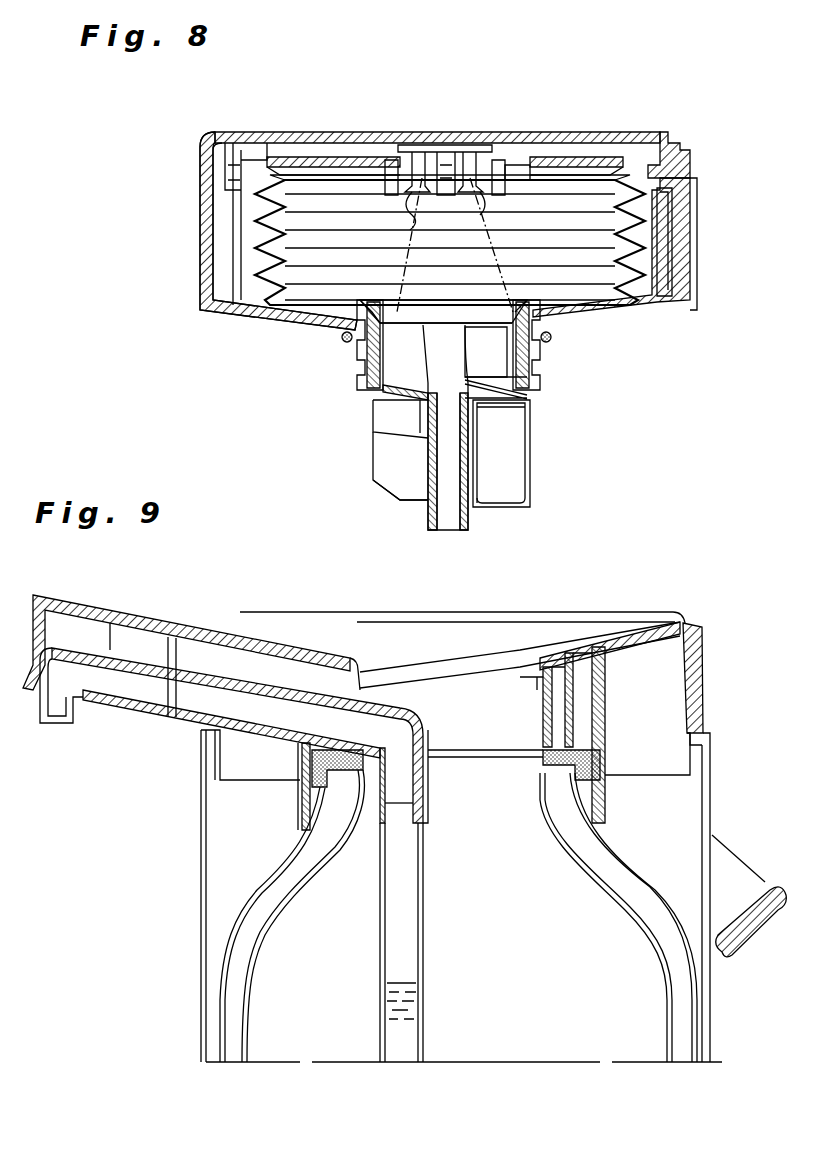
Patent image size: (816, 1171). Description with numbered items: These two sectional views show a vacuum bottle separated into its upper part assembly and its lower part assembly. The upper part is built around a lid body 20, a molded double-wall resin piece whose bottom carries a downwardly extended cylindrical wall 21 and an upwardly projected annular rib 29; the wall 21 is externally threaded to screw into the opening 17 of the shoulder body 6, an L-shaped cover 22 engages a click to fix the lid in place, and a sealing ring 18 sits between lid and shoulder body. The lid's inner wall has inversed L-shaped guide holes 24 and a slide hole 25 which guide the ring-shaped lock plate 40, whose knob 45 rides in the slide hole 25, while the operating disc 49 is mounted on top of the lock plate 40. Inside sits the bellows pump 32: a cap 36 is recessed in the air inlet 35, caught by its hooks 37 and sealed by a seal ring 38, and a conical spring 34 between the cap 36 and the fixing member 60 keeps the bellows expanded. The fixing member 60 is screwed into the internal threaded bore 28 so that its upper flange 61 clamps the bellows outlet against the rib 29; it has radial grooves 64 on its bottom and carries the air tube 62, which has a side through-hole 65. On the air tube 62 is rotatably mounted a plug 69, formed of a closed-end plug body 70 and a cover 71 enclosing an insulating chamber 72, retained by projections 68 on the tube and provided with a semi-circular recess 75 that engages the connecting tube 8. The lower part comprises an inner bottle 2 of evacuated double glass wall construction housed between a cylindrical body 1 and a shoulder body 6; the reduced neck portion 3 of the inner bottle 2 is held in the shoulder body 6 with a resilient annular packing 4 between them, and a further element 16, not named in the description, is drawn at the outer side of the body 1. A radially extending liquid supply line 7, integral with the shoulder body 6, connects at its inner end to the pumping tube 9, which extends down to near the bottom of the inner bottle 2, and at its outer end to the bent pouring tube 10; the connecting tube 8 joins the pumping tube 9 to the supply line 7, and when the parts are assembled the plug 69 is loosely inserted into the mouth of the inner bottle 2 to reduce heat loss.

In FIG. 9, the cylindrical body 1 is at (200, 883).
In FIG. 9, the inner bottle 2 is at (228, 946).
In FIG. 9, the neck portion 3 is at (542, 802).
In FIG. 9, the resilient annular packing 4 is at (316, 772).
In FIG. 9, the shoulder body 6 is at (705, 652).
In FIG. 9, the liquid supply line 7 is at (292, 748).
In FIG. 9, the connecting tube 8 is at (430, 716).
In FIG. 9, the pumping tube 9 is at (380, 946).
In FIG. 9, the pouring tube 10 is at (113, 712).
In FIG. 9, the pouring spout 16 is at (750, 937).
In FIG. 9, the opening 17 is at (537, 668).
In FIG. 8, the sealing ring 18 is at (345, 340).
In FIG. 8, the lid body 20 is at (690, 266).
In FIG. 8, the cylindrical wall 21 is at (545, 362).
In FIG. 9, the L-shaped cover 22 is at (145, 617).
In FIG. 8, the inversed L-shaped guide hole 24 is at (215, 235).
In FIG. 8, the slide hole 25 is at (660, 208).
In FIG. 8, the internal threaded bore 28 is at (550, 397).
In FIG. 8, the annular rib 29 is at (556, 338).
In FIG. 8, the bellows pump 32 is at (648, 242).
In FIG. 8, the conical spring 34 is at (490, 265).
In FIG. 8, the air inlet 35 is at (392, 165).
In FIG. 8, the cap 36 is at (452, 150).
In FIG. 8, the hooks 37 is at (420, 198).
In FIG. 8, the seal ring 38 is at (405, 145).
In FIG. 8, the lock plate 40 is at (568, 160).
In FIG. 8, the knob 45 is at (680, 172).
In FIG. 8, the operating disc 49 is at (508, 133).
In FIG. 8, the fixing member 60 is at (422, 312).
In FIG. 8, the upper flange 61 is at (520, 313).
In FIG. 8, the air tube 62 is at (430, 485).
In FIG. 8, the grooves 64 is at (483, 387).
In FIG. 8, the through-hole 65 is at (460, 387).
In FIG. 8, the projections 68 is at (428, 434).
In FIG. 8, the plug 69 is at (532, 455).
In FIG. 8, the plug body 70 is at (530, 492).
In FIG. 8, the cover 71 is at (505, 405).
In FIG. 8, the insulating chamber 72 is at (501, 453).
In FIG. 8, the recess 75 is at (400, 460).